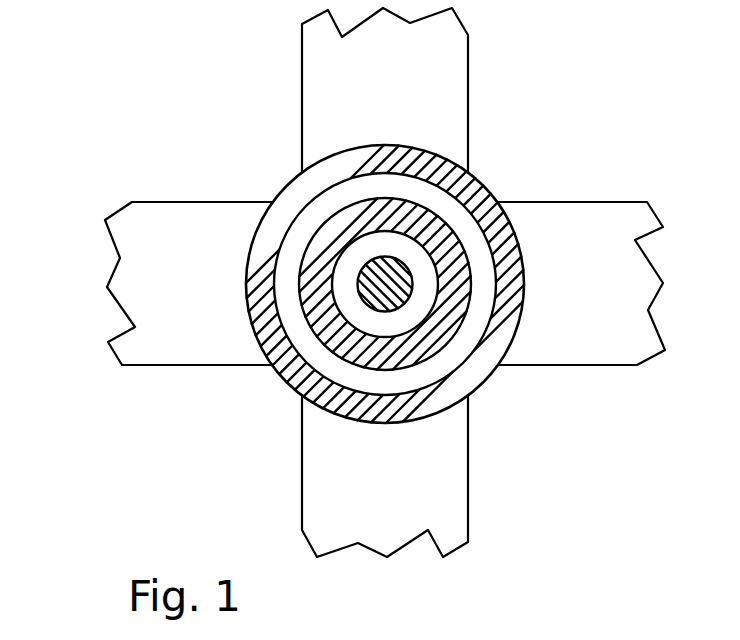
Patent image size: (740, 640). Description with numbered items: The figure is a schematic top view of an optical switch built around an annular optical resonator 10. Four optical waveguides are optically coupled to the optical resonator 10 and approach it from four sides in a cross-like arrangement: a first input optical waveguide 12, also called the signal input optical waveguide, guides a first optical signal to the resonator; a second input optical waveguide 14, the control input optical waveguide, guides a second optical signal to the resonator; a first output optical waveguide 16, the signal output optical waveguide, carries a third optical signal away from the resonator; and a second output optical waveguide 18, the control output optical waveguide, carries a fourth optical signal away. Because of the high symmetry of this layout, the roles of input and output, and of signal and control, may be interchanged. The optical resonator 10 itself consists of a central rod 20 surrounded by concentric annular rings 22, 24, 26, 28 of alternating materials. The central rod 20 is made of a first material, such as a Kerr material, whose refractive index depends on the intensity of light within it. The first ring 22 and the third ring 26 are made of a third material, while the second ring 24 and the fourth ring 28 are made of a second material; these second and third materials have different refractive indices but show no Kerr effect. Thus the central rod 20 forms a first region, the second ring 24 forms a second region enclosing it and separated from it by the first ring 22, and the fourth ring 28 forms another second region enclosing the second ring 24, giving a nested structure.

The optical resonator 10 is at (504, 168).
The first input optical waveguide 12 is at (178, 243).
The second input optical waveguide 14 is at (317, 79).
The first output optical waveguide 16 is at (597, 240).
The second output optical waveguide 18 is at (318, 503).
The central rod 20 is at (410, 293).
The first ring 22 is at (388, 323).
The second ring 24 is at (402, 360).
The third ring 26 is at (388, 379).
The fourth ring 28 is at (390, 403).